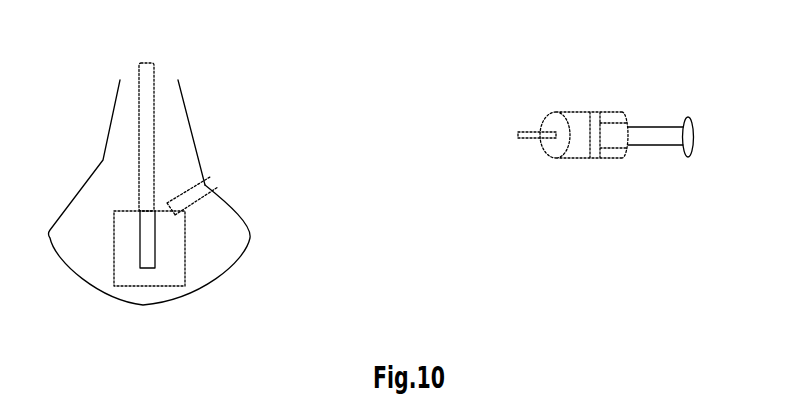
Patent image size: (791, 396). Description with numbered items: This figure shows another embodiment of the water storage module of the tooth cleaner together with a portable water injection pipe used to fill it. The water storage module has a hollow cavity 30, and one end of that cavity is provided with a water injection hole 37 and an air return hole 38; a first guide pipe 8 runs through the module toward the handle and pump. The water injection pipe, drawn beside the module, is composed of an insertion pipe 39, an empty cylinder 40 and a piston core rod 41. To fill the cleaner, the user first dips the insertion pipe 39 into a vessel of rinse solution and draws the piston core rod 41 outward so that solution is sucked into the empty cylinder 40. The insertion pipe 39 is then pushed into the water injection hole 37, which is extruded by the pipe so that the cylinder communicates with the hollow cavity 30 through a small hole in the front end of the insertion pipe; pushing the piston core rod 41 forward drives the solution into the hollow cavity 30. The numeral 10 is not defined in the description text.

The first guide pipe 8 is at (219, 148).
The probe / instrument 10 is at (152, 148).
The hollow cavity 30 is at (186, 257).
The water injection hole 37 is at (213, 188).
The air return hole 38 is at (212, 173).
The insertion pipe 39 is at (535, 143).
The empty cylinder 40 is at (583, 110).
The piston core rod 41 is at (638, 147).